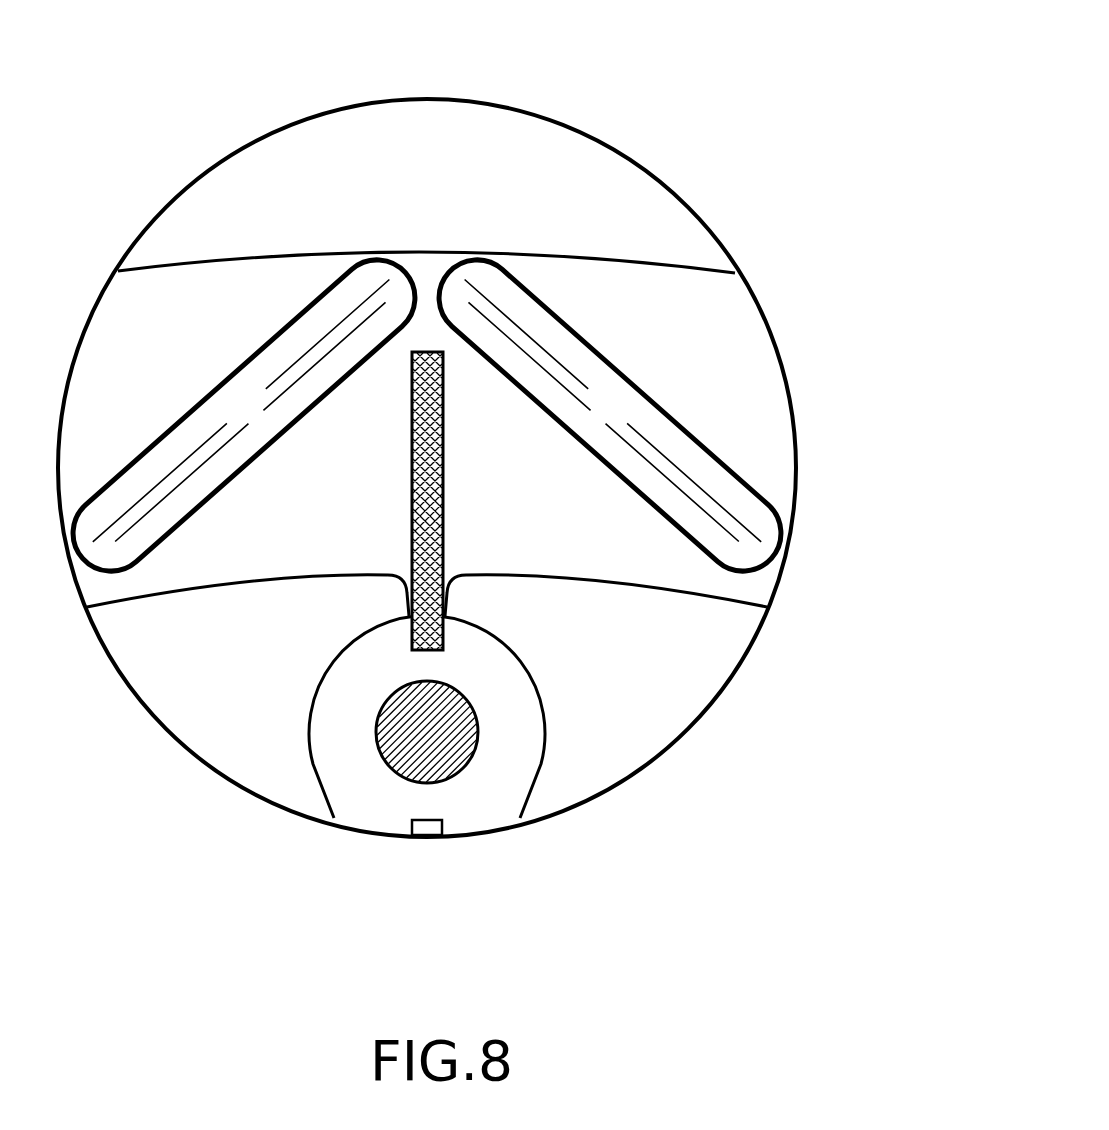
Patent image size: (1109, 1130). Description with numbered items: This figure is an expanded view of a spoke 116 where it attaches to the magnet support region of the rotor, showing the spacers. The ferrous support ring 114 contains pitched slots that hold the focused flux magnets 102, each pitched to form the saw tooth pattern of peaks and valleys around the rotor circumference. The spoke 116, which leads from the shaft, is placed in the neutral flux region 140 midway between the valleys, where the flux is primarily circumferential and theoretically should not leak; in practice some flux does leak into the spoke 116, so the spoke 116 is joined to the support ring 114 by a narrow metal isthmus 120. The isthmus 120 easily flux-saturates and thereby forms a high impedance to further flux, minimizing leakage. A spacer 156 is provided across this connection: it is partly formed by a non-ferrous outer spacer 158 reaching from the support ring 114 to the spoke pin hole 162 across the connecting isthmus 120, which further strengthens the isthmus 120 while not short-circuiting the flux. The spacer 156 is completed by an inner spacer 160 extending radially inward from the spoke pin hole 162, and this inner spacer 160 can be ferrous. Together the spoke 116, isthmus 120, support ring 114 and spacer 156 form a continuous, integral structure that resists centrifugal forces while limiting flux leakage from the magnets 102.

The neutral flux region 140 is at (733, 147).
The ferrous support ring 114 is at (762, 403).
The magnet 102 is at (762, 507).
The isthmus 120 is at (390, 594).
The spoke 116 is at (515, 805).
The outer spacer 158 is at (443, 463).
The spacer 156 is at (443, 525).
The spoke pin hole 162 is at (407, 723).
The inner spacer 160 is at (435, 828).